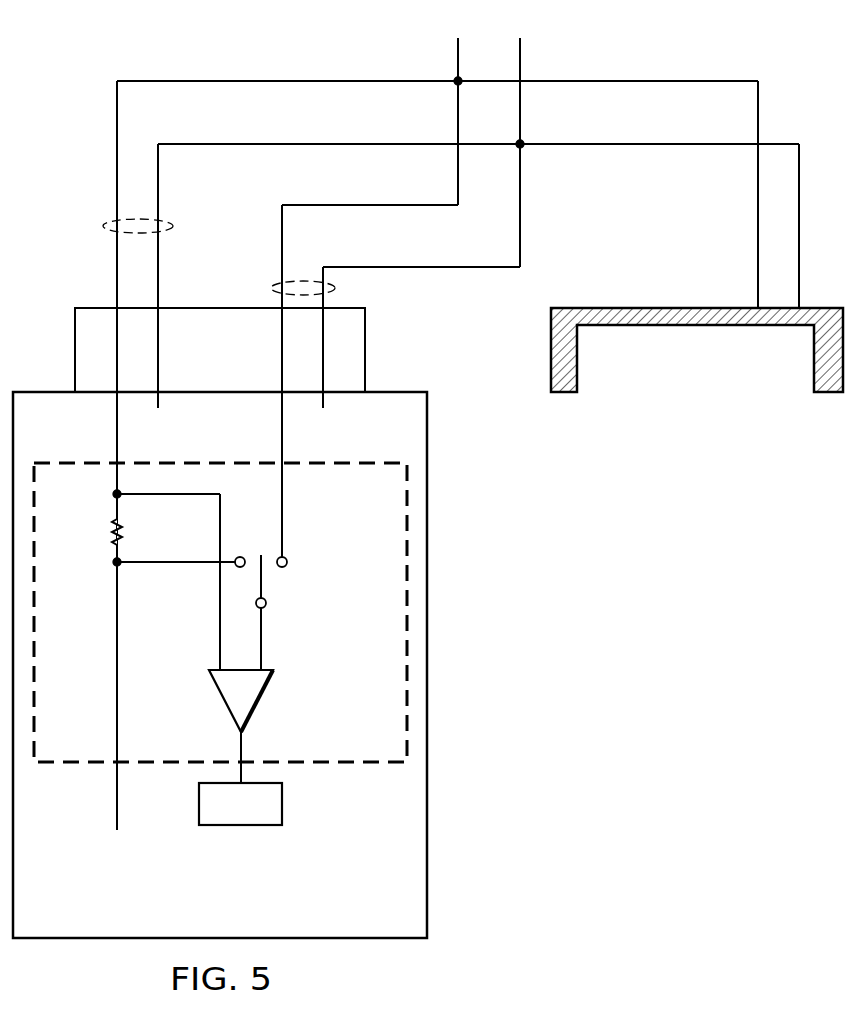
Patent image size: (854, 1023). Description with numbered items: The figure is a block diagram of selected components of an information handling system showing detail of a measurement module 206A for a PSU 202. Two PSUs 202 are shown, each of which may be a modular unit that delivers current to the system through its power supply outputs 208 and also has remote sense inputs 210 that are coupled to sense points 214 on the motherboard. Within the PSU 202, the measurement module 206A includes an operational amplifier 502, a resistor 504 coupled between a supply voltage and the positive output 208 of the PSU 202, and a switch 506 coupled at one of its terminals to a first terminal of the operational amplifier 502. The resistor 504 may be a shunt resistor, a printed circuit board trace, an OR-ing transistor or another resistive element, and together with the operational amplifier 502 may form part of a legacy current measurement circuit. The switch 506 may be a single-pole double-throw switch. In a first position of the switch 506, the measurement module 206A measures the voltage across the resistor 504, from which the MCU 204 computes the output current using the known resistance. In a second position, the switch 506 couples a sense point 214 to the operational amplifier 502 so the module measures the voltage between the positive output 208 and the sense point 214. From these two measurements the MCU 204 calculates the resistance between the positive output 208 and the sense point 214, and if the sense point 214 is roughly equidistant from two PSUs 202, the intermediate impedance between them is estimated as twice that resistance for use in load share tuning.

The power supply unit (PSU) 202 is at (240, 910).
The microcontroller unit (MCU) 204 is at (283, 805).
The measurement module 206A is at (82, 764).
The power supply output 208 is at (105, 226).
The remote sense input 210 is at (271, 289).
The sense point 214 is at (456, 78).
The operational amplifier 502 is at (258, 700).
The resistor 504 is at (112, 530).
The switch 506 is at (264, 578).